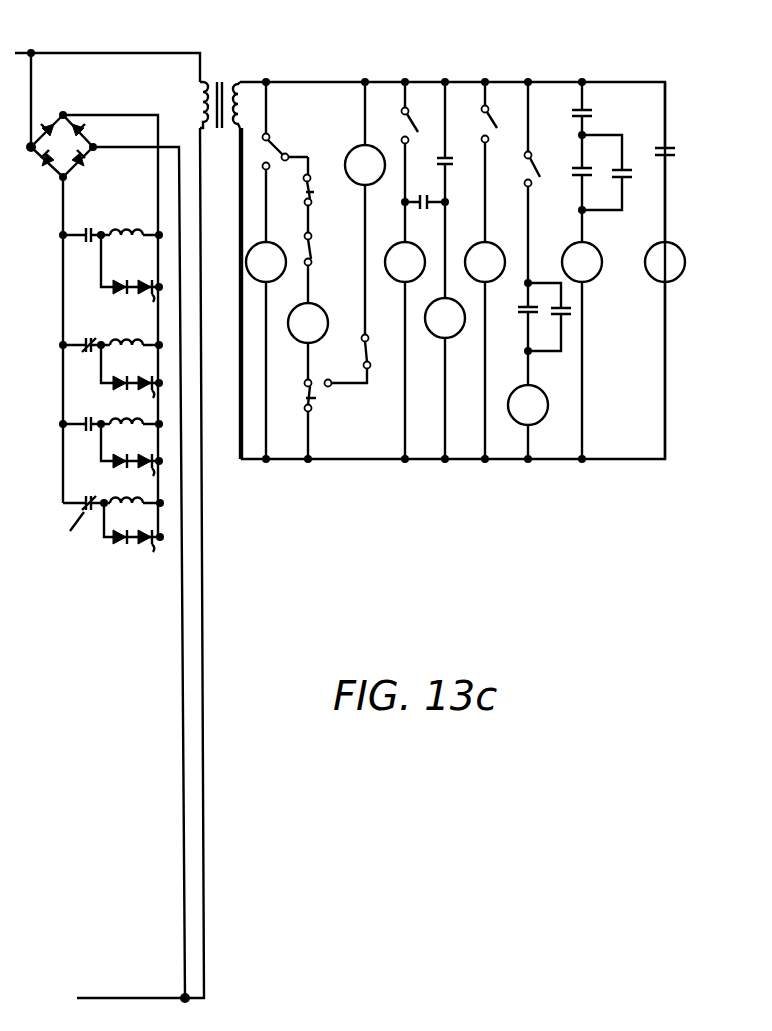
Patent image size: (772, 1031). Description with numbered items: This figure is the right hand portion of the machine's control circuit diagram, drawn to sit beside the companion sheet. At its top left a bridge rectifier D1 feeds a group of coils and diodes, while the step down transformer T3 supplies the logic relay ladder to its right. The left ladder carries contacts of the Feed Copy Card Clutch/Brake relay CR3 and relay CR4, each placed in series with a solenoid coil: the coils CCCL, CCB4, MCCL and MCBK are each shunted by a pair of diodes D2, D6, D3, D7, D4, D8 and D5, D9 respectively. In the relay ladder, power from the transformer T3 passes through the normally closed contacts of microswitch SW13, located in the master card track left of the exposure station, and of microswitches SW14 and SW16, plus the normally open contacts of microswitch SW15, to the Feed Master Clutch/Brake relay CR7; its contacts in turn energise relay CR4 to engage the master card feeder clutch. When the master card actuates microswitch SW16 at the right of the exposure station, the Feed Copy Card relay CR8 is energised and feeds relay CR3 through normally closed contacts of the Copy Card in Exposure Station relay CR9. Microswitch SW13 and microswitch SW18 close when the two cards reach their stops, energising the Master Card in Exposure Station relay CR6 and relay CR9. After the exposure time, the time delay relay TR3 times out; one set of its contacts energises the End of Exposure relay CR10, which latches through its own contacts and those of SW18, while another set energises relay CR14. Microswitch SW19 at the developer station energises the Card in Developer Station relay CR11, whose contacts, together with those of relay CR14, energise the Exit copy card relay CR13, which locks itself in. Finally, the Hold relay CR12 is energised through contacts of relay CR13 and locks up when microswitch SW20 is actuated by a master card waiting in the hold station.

The bridge rectifier D1 is at (62, 144).
The step down transformer T3 is at (220, 88).
The Feed Copy Card Clutch/Brake relay CR3 is at (89, 277).
The relay CR4 is at (70, 467).
The cut chuck close solenoid CCCL is at (132, 220).
The cut chuck brake solenoid CCB4 is at (134, 330).
The mandrel chuck close solenoid MCCL is at (133, 409).
The mandrel chuck brake solenoid MCBK is at (130, 489).
The diode D2 is at (120, 277).
The diode D3 is at (120, 373).
The diode D4 is at (120, 451).
The diode D5 is at (120, 550).
The diode D6 is at (147, 281).
The diode D7 is at (148, 377).
The diode D8 is at (147, 455).
The diode D9 is at (151, 553).
The microswitch SW13 is at (289, 149).
The master card hopper exit microswitch SW14 is at (337, 186).
The microswitch SW15 is at (338, 254).
The microswitch SW16 is at (340, 372).
The microswitch SW18 is at (432, 82).
The microswitch SW19 is at (500, 82).
The microswitch SW20 is at (566, 76).
The Master Card in Exposure Station relay CR6 is at (266, 262).
The Feed Master Clutch/Brake relay CR7 is at (308, 323).
The Feed Copy Card relay CR8 is at (365, 165).
The Copy Card in Exposure Station relay CR9 is at (405, 262).
The End of Exposure relay CR10 is at (436, 257).
The Card in Developer Station relay CR11 is at (551, 184).
The Hold relay CR12 is at (520, 314).
The Exit copy card relay CR13 is at (585, 312).
The relay CR14 is at (634, 170).
The time delay relay TR3 is at (676, 132).